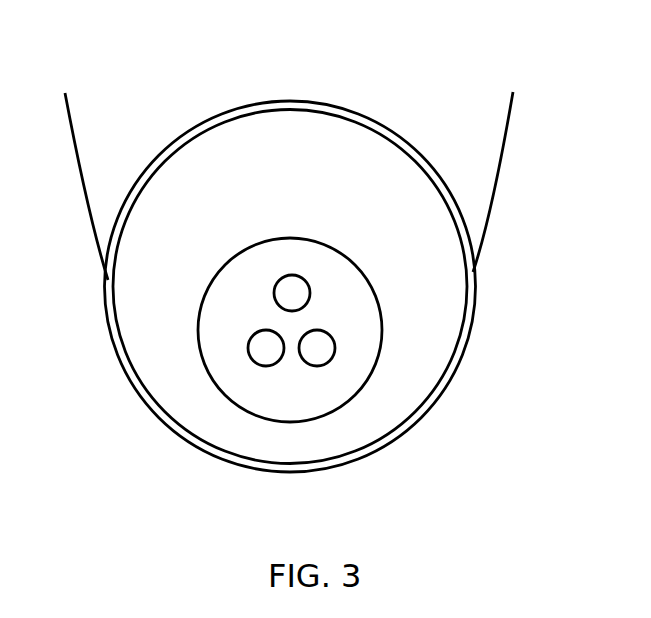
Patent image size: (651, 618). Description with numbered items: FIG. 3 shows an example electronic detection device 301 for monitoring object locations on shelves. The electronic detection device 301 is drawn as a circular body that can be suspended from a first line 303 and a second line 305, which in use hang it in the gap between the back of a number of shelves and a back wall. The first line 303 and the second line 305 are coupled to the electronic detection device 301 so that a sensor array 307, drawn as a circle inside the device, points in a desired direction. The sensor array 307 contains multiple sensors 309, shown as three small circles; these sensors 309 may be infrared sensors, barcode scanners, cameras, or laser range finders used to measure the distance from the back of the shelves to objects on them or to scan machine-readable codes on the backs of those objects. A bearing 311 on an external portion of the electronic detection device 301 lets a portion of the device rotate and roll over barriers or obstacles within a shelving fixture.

The electronic detection device 301 is at (279, 86).
The first line 303 is at (70, 117).
The second line 305 is at (508, 123).
The sensor array 307 is at (314, 240).
The sensors 309 is at (315, 370).
The bearing 311 is at (404, 431).